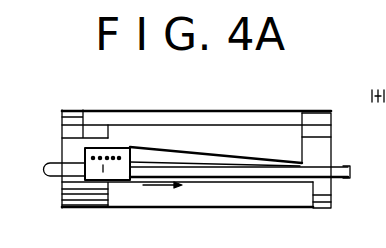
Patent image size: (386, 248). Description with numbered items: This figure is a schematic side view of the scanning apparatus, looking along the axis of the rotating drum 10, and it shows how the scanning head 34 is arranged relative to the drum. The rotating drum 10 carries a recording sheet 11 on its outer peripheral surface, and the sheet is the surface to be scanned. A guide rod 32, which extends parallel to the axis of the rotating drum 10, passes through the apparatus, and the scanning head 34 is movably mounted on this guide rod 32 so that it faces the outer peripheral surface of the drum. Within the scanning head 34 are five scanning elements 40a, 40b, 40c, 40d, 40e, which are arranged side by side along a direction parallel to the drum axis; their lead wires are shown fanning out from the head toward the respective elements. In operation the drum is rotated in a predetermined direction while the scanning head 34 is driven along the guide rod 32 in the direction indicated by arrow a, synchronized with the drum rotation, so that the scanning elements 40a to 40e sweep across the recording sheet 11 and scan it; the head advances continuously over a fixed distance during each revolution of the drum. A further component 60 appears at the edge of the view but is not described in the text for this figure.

The recording sheet 11 is at (259, 120).
The rotating drum 10 is at (320, 128).
The guide rod 32 is at (337, 170).
The scanning head 34 is at (87, 180).
The scanning element 40a is at (84, 149).
The scanning element 40b is at (93, 157).
The scanning element 40c is at (107, 157).
The scanning element 40d is at (113, 157).
The scanning element 40e is at (119, 157).
The adjacent component (partially shown) 60 is at (375, 131).